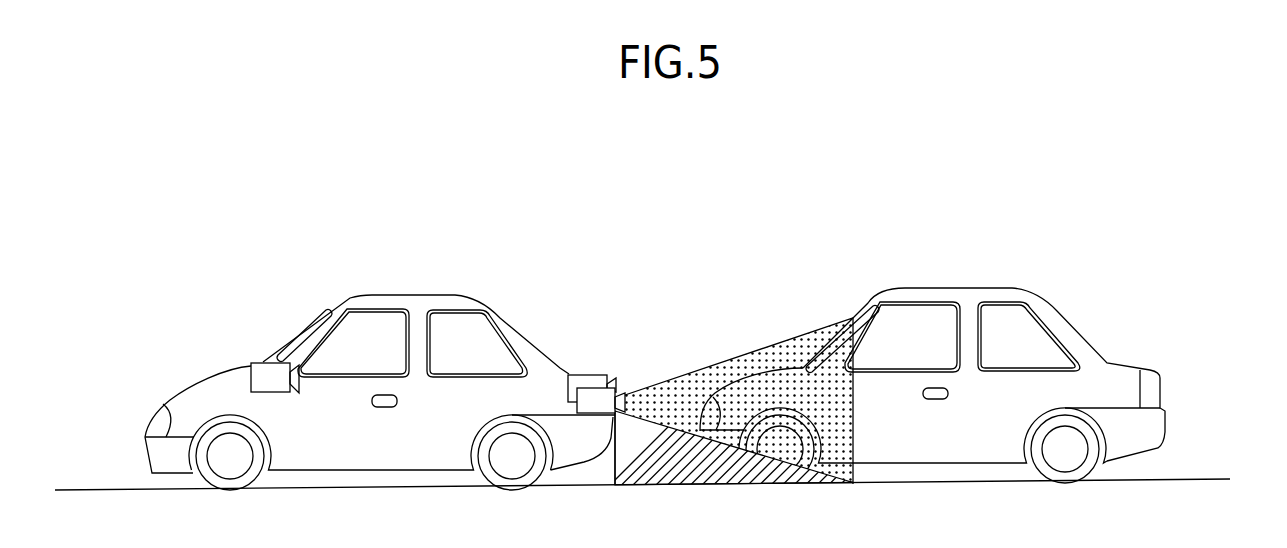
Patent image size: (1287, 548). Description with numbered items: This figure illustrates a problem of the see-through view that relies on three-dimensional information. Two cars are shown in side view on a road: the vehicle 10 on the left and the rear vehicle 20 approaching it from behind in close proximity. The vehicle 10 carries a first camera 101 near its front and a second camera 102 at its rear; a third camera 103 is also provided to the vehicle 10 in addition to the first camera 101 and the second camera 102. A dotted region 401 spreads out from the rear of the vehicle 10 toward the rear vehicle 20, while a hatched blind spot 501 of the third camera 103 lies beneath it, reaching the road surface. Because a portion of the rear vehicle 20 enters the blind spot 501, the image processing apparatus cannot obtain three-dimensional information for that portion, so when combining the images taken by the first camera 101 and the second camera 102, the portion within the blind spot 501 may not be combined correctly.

The vehicle 10 is at (385, 396).
The rear vehicle 20 is at (965, 288).
The first camera 101 is at (253, 363).
The second camera 102 is at (600, 374).
The third camera 103 is at (596, 418).
The imaging range of rear camera 401 is at (822, 325).
The blind spot 501 is at (688, 476).